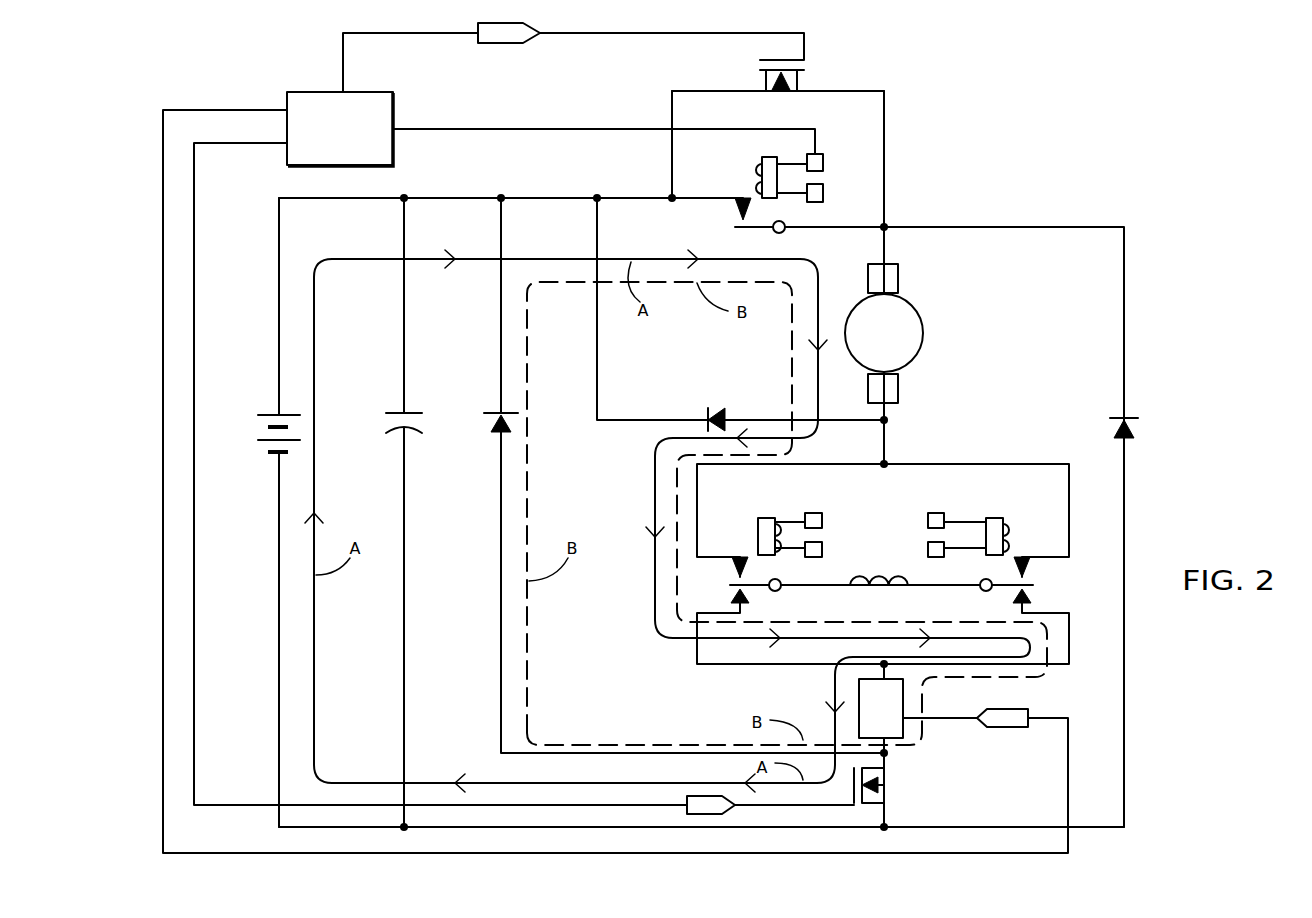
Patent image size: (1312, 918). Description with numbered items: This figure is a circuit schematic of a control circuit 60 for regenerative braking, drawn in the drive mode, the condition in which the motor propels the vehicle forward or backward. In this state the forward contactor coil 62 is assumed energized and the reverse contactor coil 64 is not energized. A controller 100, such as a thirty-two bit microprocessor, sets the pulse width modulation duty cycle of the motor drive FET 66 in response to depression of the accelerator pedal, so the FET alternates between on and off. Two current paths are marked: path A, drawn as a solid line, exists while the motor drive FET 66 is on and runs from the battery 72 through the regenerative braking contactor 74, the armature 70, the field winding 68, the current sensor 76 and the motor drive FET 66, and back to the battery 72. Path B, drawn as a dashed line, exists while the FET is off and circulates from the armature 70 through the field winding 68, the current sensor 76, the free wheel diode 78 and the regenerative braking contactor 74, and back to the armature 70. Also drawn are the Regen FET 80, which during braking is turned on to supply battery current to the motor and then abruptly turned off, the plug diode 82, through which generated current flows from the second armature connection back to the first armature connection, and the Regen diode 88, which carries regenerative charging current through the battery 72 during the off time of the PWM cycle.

The control circuit 60 is at (977, 117).
The forward contactor coil 62 is at (738, 540).
The reverse contactor coil 64 is at (1027, 544).
The motor drive FET 66 is at (901, 788).
The field winding 68 is at (876, 575).
The armature 70 is at (923, 333).
The battery 72 is at (279, 412).
The regenerative braking contactor 74 is at (723, 224).
The current sensor 76 is at (903, 701).
The free wheel diode 78 is at (490, 426).
The Regen FET 80 is at (817, 75).
The plug diode 82 is at (718, 408).
The Regen diode 88 is at (1131, 416).
The controller 100 is at (306, 90).